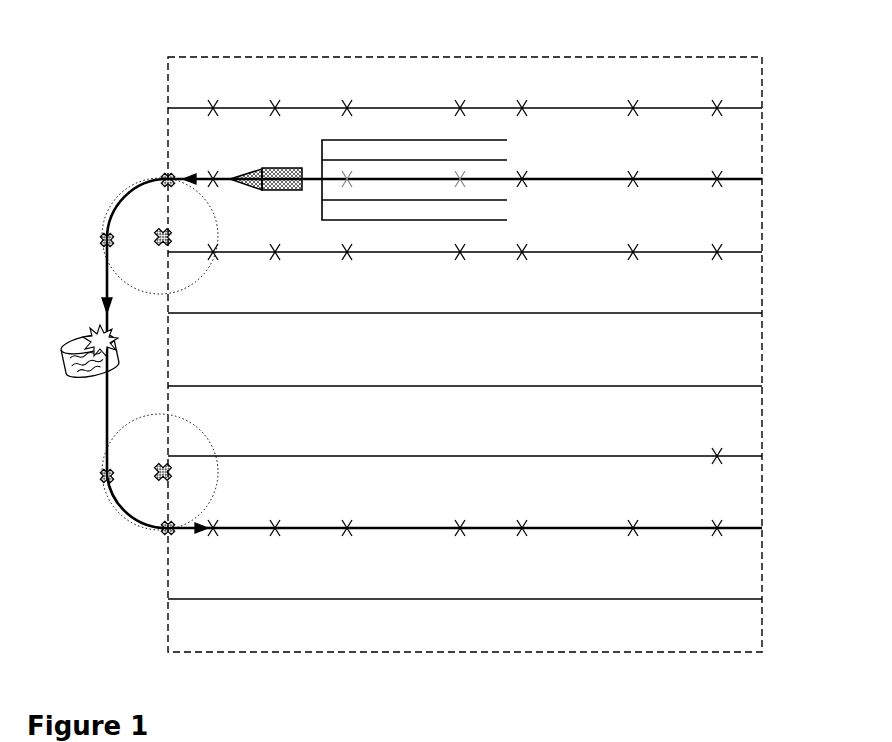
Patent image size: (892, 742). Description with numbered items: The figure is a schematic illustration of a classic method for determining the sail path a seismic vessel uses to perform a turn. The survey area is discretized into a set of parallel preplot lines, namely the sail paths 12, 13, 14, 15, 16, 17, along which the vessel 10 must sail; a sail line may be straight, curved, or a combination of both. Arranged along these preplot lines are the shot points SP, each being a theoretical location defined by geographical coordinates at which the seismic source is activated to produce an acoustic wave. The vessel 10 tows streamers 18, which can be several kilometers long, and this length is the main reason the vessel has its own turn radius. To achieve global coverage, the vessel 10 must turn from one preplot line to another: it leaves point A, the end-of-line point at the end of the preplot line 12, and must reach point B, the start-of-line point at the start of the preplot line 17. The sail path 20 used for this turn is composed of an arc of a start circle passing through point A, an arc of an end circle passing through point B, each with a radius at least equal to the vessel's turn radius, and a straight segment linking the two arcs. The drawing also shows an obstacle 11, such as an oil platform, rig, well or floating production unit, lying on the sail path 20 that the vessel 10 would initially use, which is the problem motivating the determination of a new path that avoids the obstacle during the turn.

The vessel 10 is at (293, 166).
The obstacle 11 is at (72, 337).
The sail path 12 is at (735, 179).
The sail path 13 is at (735, 252).
The sail path 14 is at (735, 313).
The sail path 15 is at (735, 386).
The sail path 16 is at (735, 456).
The sail path 17 is at (735, 528).
The towed streamers 18 is at (404, 154).
The sail path 20 is at (113, 208).
The shot point SP is at (524, 104).